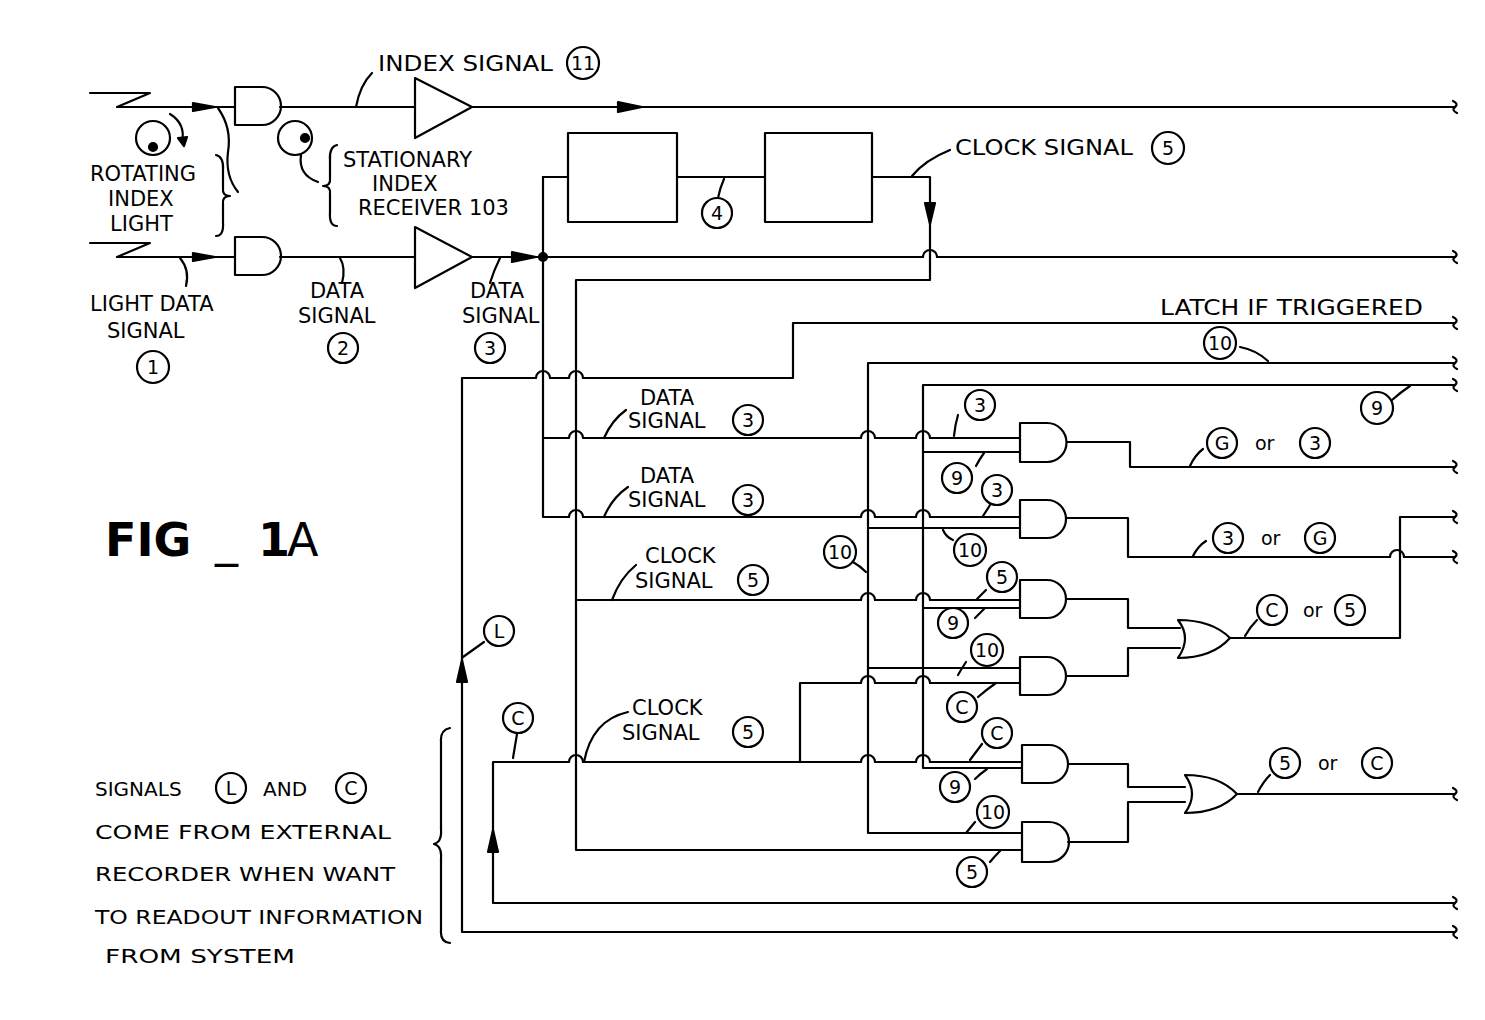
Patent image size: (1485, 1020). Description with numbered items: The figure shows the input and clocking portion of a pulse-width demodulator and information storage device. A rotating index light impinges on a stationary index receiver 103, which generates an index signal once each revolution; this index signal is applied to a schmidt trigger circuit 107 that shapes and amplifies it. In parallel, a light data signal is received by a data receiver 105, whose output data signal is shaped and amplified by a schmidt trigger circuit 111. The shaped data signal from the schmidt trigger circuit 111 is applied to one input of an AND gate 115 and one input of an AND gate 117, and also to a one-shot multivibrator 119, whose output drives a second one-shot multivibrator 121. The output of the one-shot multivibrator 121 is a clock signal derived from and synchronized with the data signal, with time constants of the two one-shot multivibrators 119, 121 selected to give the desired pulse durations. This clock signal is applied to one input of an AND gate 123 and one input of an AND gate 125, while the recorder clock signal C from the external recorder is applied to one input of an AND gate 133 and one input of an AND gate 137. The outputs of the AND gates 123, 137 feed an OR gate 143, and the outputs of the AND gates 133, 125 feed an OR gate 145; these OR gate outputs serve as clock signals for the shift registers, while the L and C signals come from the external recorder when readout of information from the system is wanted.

The index receiver 103 is at (253, 82).
The data receiver 105 is at (292, 216).
The schmidt trigger circuit 107 is at (468, 113).
The schmidt trigger circuit 111 is at (468, 250).
The one-shot multivibrator 119 is at (677, 150).
The one-shot multivibrator 121 is at (872, 150).
The AND gate 115 is at (1062, 423).
The AND gate 117 is at (1062, 500).
The AND gate 123 is at (1062, 582).
The AND gate 137 is at (1062, 690).
The AND gate 133 is at (1066, 745).
The AND gate 125 is at (1060, 862).
The OR gate 143 is at (1212, 620).
The OR gate 145 is at (1206, 773).